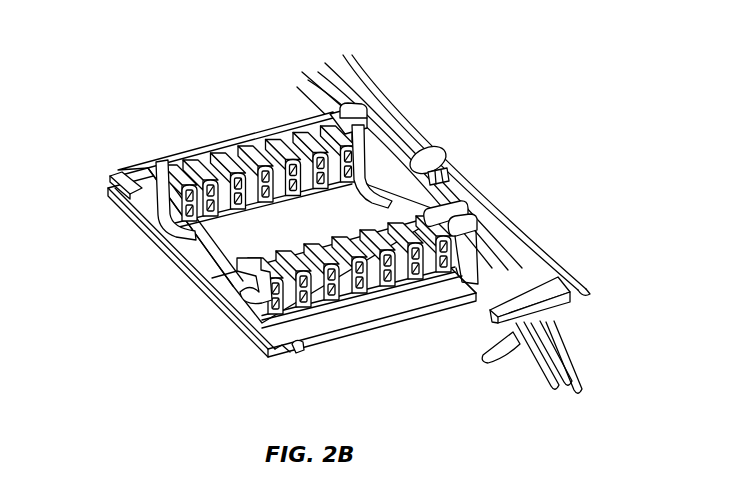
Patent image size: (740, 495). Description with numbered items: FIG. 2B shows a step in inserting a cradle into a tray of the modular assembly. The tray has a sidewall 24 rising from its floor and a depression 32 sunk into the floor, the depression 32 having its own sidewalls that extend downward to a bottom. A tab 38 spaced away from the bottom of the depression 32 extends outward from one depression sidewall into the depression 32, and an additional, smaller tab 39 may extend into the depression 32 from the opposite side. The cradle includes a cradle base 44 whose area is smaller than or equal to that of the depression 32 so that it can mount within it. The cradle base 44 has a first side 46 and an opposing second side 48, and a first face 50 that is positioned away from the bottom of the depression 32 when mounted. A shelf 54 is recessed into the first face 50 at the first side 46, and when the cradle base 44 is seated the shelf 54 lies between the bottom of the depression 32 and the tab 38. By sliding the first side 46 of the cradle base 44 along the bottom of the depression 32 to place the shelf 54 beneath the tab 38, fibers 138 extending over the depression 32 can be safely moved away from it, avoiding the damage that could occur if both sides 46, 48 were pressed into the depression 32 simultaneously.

The sidewall 24 is at (483, 207).
The depression 32 is at (220, 303).
The tab 38 is at (478, 288).
The additional smaller tab 39 is at (107, 182).
The cradle base 44 is at (237, 242).
The first side 46 is at (378, 160).
The second side 48 is at (235, 308).
The first face 50 is at (413, 308).
The shelf 54 is at (300, 347).
The fibers 138 is at (531, 348).